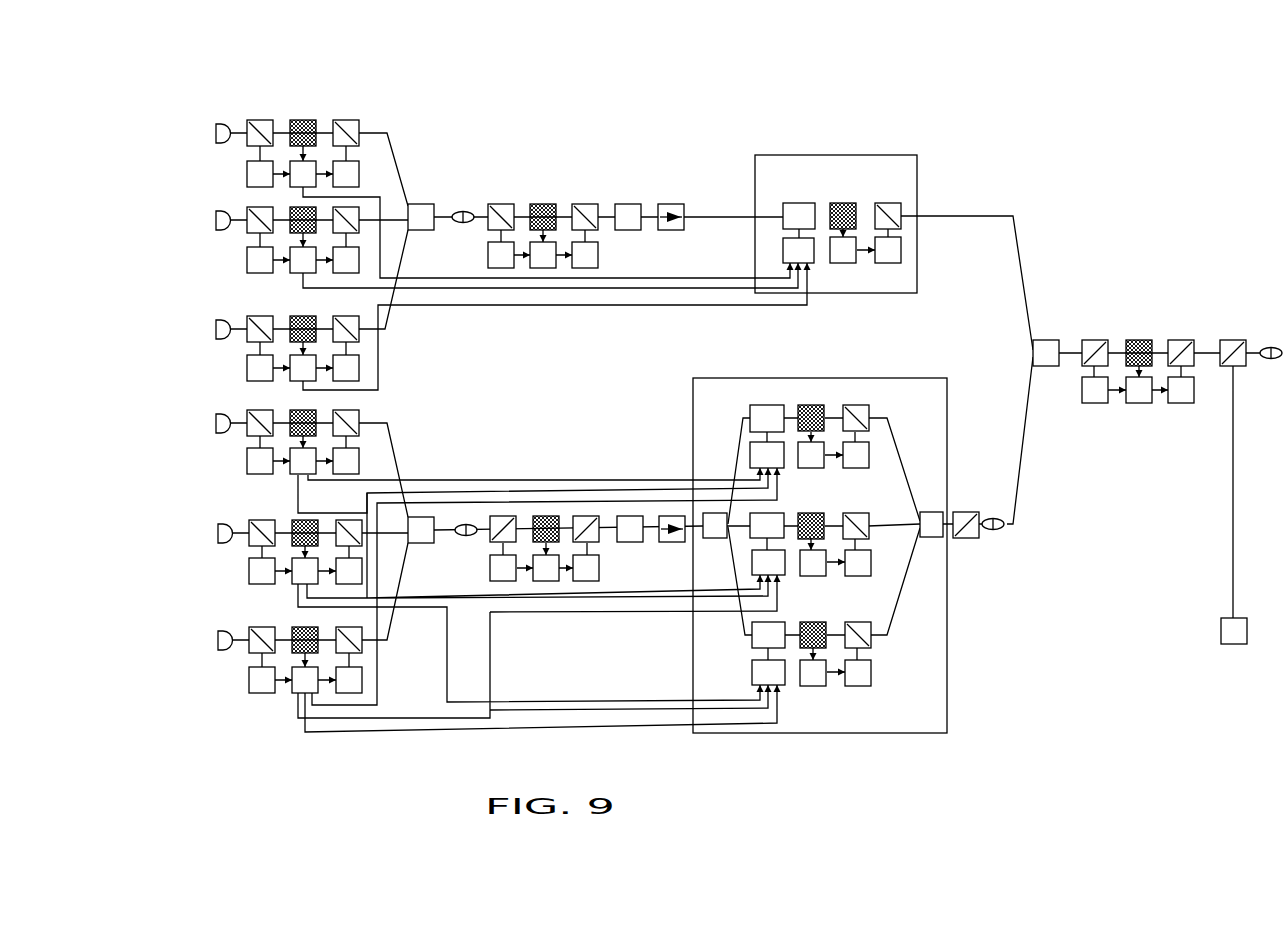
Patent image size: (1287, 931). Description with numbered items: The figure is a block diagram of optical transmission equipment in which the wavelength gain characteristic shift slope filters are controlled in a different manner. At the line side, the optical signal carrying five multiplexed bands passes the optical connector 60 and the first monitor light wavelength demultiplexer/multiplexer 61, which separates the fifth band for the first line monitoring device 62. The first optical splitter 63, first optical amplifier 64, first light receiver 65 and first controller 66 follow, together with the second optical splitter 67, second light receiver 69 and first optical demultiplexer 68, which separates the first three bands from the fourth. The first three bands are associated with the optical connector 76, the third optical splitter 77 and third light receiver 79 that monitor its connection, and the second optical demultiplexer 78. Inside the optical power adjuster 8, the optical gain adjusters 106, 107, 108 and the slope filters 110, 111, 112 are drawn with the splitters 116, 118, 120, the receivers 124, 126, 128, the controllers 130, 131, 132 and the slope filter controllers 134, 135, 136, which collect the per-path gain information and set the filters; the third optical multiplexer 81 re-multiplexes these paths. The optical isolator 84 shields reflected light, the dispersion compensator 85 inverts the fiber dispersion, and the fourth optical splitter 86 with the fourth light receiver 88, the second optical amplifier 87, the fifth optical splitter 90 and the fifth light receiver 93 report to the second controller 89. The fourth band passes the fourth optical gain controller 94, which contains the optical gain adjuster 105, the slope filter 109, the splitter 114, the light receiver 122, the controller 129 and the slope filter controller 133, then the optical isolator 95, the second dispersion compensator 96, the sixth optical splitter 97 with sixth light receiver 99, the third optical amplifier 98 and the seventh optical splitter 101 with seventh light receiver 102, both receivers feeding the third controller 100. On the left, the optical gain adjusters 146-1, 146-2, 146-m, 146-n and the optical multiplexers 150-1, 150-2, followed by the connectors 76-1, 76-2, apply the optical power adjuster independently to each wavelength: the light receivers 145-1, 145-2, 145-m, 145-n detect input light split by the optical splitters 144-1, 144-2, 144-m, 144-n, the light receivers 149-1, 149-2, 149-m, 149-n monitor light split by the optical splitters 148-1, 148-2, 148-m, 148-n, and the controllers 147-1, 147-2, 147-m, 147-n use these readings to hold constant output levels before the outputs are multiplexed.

The optical power adjuster 8 is at (820, 555).
The optical connector 60 is at (1282, 345).
The first monitor light wavelength demultiplexer/multiplexer 61 is at (1234, 340).
The first line monitoring device 62 is at (1233, 645).
The first optical splitter 63 is at (1182, 340).
The first optical amplifier 64 is at (1139, 340).
The first light receiver 65 is at (1182, 405).
The first controller 66 is at (1139, 405).
The second optical splitter 67 is at (1096, 340).
The first optical demultiplexer 68 is at (1046, 340).
The second light receiver 69 is at (1096, 405).
The optical connector 76 is at (997, 535).
The lens 76-1 is at (457, 212).
The lens 76-2 is at (468, 524).
The third optical splitter 77 is at (969, 512).
The second optical demultiplexer 78 is at (934, 512).
The third light receiver 79 is at (971, 553).
The third optical multiplexer 81 is at (717, 538).
The optical isolator 84 is at (673, 540).
The dispersion compensator 85 is at (631, 540).
The fourth optical splitter 86 is at (588, 516).
The second optical amplifier 87 is at (547, 516).
The fourth light receiver 88 is at (600, 568).
The second controller 89 is at (546, 582).
The fifth optical splitter 90 is at (505, 516).
The fifth light receiver 93 is at (503, 582).
The fourth optical gain controller 94 is at (836, 224).
The optical isolator 95 is at (671, 202).
The second dispersion compensator 96 is at (626, 202).
The sixth optical splitter 97 is at (584, 202).
The third optical amplifier 98 is at (542, 202).
The sixth light receiver 99 is at (598, 255).
The third controller 100 is at (543, 268).
The seventh optical splitter 101 is at (506, 202).
The seventh light receiver 102 is at (501, 268).
The optical gain adjuster 105 is at (846, 203).
The optical gain adjuster 106 is at (814, 405).
The optical gain adjuster 107 is at (814, 514).
The optical gain adjuster 108 is at (817, 621).
The wavelength gain characteristic shift slope filter 109 is at (801, 203).
The wavelength gain characteristic shift slope filter 110 is at (767, 418).
The wavelength gain characteristic shift slope filter 111 is at (767, 525).
The wavelength gain characteristic shift slope filter 112 is at (768, 635).
The polarization beam splitter 114 is at (889, 203).
The polarization beam splitter 116 is at (861, 405).
The polarization beam splitter 118 is at (861, 514).
The polarization beam splitter 120 is at (864, 621).
The controller 122 is at (889, 264).
The controller 124 is at (861, 468).
The controller 126 is at (864, 575).
The controller 128 is at (864, 686).
The controller 129 is at (847, 264).
The driver 130 is at (816, 468).
The driver 131 is at (817, 575).
The driver 132 is at (817, 686).
The wavelength gain characteristic shift slope filter controller 133 is at (798, 250).
The wavelength gain characteristic shift slope filter controller 134 is at (767, 455).
The wavelength gain characteristic shift slope filter controller 135 is at (768, 562).
The wavelength gain characteristic shift slope filter controller 136 is at (768, 672).
The optical splitter 144-1 is at (260, 120).
The optical splitter 144-2 is at (247, 222).
The optical splitter 144-m is at (247, 328).
The optical splitter 144-n is at (249, 643).
The light receiver 145-1 is at (247, 174).
The light receiver 145-2 is at (247, 260).
The light receiver 145-m is at (247, 368).
The light receiver 145-n is at (249, 680).
The optical gain adjuster 146-1 is at (303, 120).
The optical gain adjuster 146-2 is at (303, 207).
The optical gain adjuster 146-m is at (303, 316).
The optical gain adjuster 146-n is at (305, 627).
The controller 147-1 is at (292, 187).
The controller 147-2 is at (298, 273).
The controller 147-m is at (297, 381).
The controller 147-n is at (295, 693).
The optical splitter 148-1 is at (347, 120).
The optical splitter 148-2 is at (417, 204).
The optical splitter 148-m is at (380, 340).
The optical splitter 148-n is at (362, 643).
The light receiver 149-1 is at (359, 170).
The light receiver 149-2 is at (359, 255).
The light receiver 149-m is at (359, 366).
The light receiver 149-n is at (340, 695).
The optical multiplexer 150-1 is at (412, 204).
The optical multiplexer 150-2 is at (410, 517).